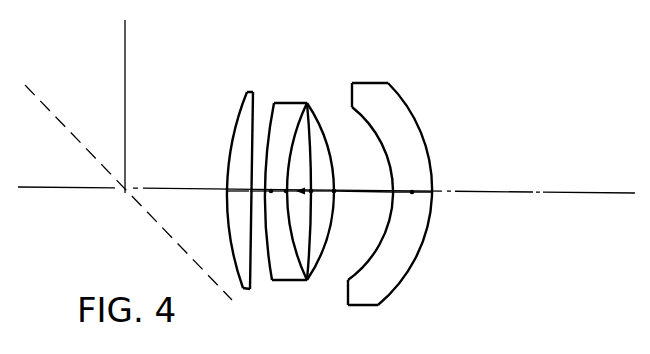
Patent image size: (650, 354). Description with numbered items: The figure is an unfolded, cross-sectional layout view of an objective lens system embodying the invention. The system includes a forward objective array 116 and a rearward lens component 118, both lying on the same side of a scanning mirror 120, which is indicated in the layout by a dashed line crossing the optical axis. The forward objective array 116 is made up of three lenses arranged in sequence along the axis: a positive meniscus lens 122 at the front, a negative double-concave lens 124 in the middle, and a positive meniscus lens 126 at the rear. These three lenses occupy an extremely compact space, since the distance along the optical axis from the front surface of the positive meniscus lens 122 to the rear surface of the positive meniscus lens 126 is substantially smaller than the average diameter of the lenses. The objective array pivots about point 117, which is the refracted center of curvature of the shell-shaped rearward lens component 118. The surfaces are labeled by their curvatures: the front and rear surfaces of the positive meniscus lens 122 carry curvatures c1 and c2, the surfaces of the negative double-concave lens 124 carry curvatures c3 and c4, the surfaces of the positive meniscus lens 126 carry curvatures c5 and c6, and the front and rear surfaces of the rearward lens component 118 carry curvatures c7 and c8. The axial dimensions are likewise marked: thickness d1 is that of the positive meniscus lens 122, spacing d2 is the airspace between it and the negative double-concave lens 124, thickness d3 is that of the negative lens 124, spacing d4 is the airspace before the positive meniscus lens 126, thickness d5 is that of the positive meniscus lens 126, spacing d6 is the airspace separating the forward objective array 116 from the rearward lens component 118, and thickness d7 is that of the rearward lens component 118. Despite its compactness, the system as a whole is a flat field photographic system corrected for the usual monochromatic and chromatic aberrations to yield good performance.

The forward objective array 116 is at (303, 178).
The pivot point 117 is at (250, 234).
The rearward lens component 118 is at (415, 187).
The scanning mirror 120 is at (78, 134).
The positive meniscus lens 122 is at (215, 179).
The negative double-concave lens 124 is at (289, 202).
The positive meniscus lens 126 is at (340, 225).
The thickness of lens 122 d1 is at (240, 191).
The airspace between lenses 122 and 124 d2 is at (271, 190).
The thickness of lens 124 d3 is at (289, 191).
The airspace between lenses 124 and 126 d4 is at (323, 255).
The thickness of lens 126 d5 is at (358, 191).
The airspace between lens 126 and lens component 118 d6 is at (353, 205).
The thickness of lens component 118 d7 is at (414, 191).
The curvature of front surface of lens 122 c1 is at (227, 216).
The curvature of rear surface of lens 122 c2 is at (225, 84).
The curvature of front surface of lens 124 c3 is at (272, 280).
The curvature of rear surface of lens 124 c4 is at (300, 279).
The curvature of front surface of lens 126 c5 is at (313, 263).
The curvature of rear surface of lens 126 c6 is at (325, 258).
The curvature of front surface of lens component 118 c7 is at (379, 236).
The curvature of rear surface of lens component 118 c8 is at (421, 256).